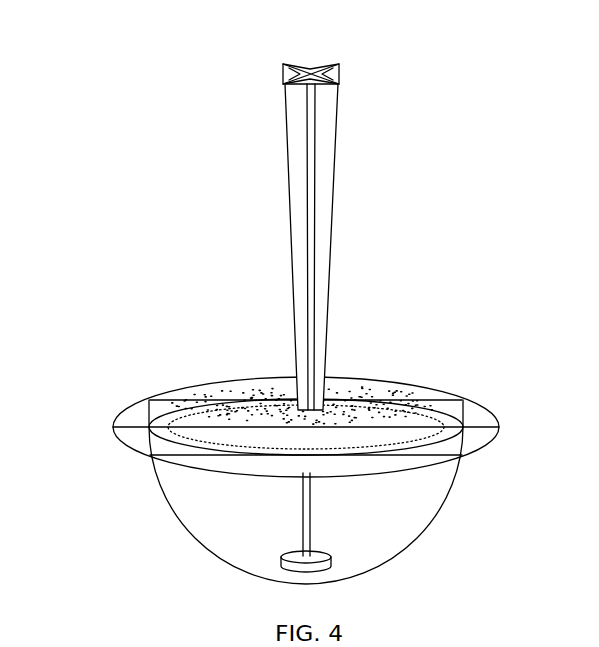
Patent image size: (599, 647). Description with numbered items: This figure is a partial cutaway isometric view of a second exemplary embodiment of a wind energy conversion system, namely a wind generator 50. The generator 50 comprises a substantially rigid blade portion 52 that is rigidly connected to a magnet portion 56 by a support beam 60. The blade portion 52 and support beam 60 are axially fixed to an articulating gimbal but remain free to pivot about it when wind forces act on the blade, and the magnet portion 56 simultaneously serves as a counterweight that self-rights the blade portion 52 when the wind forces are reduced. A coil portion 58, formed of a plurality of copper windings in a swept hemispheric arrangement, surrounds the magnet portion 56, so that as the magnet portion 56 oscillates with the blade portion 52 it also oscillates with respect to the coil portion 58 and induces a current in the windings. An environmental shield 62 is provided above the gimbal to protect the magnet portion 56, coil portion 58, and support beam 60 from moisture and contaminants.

The generator 50 is at (121, 155).
The blade portion 52 is at (340, 223).
The magnet portion 56 is at (345, 563).
The coil portion 58 is at (452, 503).
The support beam 60 is at (295, 507).
The environmental shield 62 is at (213, 376).